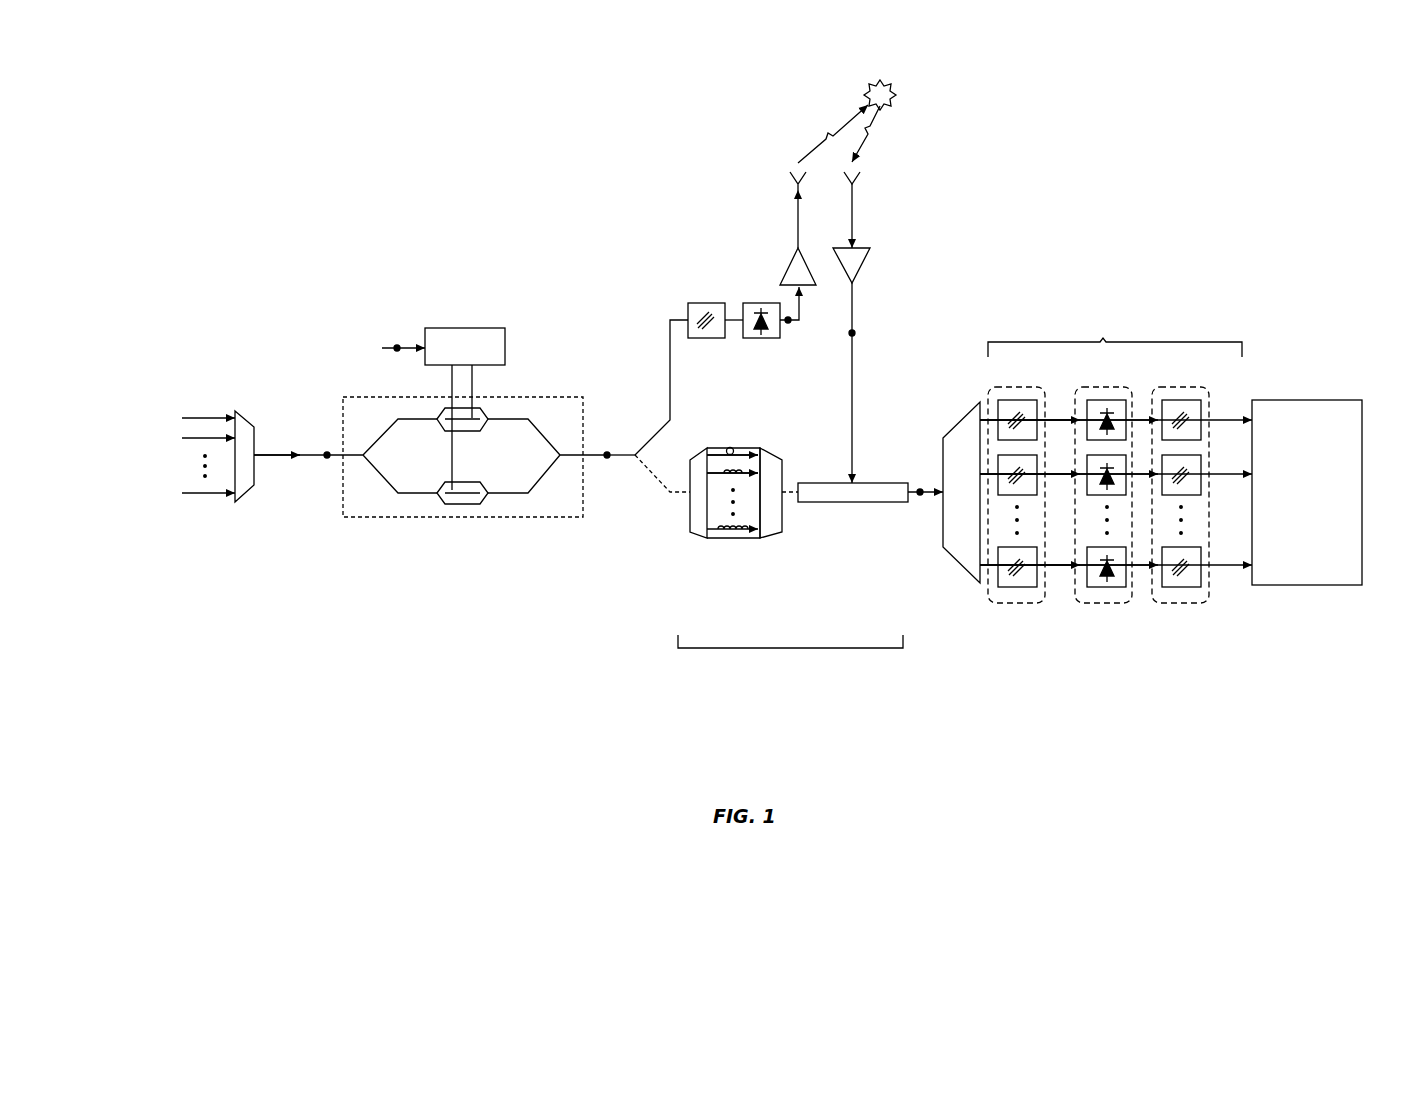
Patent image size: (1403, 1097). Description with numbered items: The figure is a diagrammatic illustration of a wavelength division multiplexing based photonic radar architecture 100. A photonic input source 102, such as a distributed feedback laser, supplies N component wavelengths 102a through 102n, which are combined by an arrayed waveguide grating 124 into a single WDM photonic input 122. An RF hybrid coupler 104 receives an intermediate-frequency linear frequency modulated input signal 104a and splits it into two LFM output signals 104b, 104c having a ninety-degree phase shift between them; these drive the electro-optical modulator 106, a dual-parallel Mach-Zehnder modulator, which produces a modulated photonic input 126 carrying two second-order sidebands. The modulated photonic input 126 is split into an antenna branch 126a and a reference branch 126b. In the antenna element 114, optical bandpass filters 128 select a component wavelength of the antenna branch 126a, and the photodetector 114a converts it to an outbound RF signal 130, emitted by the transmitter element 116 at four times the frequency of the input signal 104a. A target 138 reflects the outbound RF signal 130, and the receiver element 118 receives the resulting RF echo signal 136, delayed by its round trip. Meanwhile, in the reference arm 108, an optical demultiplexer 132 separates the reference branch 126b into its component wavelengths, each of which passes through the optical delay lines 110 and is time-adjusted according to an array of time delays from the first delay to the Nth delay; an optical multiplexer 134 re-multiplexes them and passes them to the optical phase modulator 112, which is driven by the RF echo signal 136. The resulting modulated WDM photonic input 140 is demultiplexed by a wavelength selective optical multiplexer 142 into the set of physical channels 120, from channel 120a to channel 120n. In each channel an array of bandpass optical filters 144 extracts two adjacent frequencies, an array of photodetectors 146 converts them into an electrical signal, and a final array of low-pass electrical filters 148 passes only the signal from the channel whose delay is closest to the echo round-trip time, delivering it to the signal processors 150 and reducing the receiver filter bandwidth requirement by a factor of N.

The wavelength division multiplexing based photonic radar architecture 100 is at (272, 126).
The photonic input source 102 is at (206, 560).
The component wavelength 102a is at (198, 416).
The component wavelength 102n is at (195, 495).
The RF hybrid coupler 104 is at (492, 358).
The IF-LFM input signal 104a is at (397, 345).
The LFM output signal 104b is at (450, 390).
The LFM output signal 104c is at (474, 405).
The electro-optical modulator 106 is at (466, 518).
The reference arm 108 is at (786, 650).
The optical delay lines 110 is at (709, 566).
The optical phase modulator 112 is at (850, 498).
The antenna element 114 is at (656, 134).
The photodetector 114a is at (760, 302).
The transmitter element 116 is at (790, 268).
The receiver element 118 is at (856, 258).
The wavelength-selective physical channels 120 is at (1104, 340).
The physical channel 120a is at (1057, 417).
The physical channel 120n is at (1222, 568).
The photonic input 122 is at (325, 458).
The arrayed waveguide grating 124 is at (246, 437).
The modulated photonic input 126 is at (608, 452).
The antenna branch 126a is at (671, 394).
The reference branch 126b is at (646, 474).
The optical bandpass filter 128 is at (714, 311).
The outbound RF signal 130 is at (815, 148).
The optical demultiplexer 132 is at (700, 508).
The optical multiplexer 134 is at (770, 520).
The RF echo signal 136 is at (878, 128).
The target 138 is at (892, 98).
The modulated WDM photonic input 140 is at (918, 490).
The wavelength selective optical multiplexer 142 is at (957, 437).
The bandpass optical filters 144 is at (1017, 605).
The photodetectors 146 is at (1103, 605).
The low-pass electrical filters 148 is at (1180, 605).
The signal processors 150 is at (1290, 400).